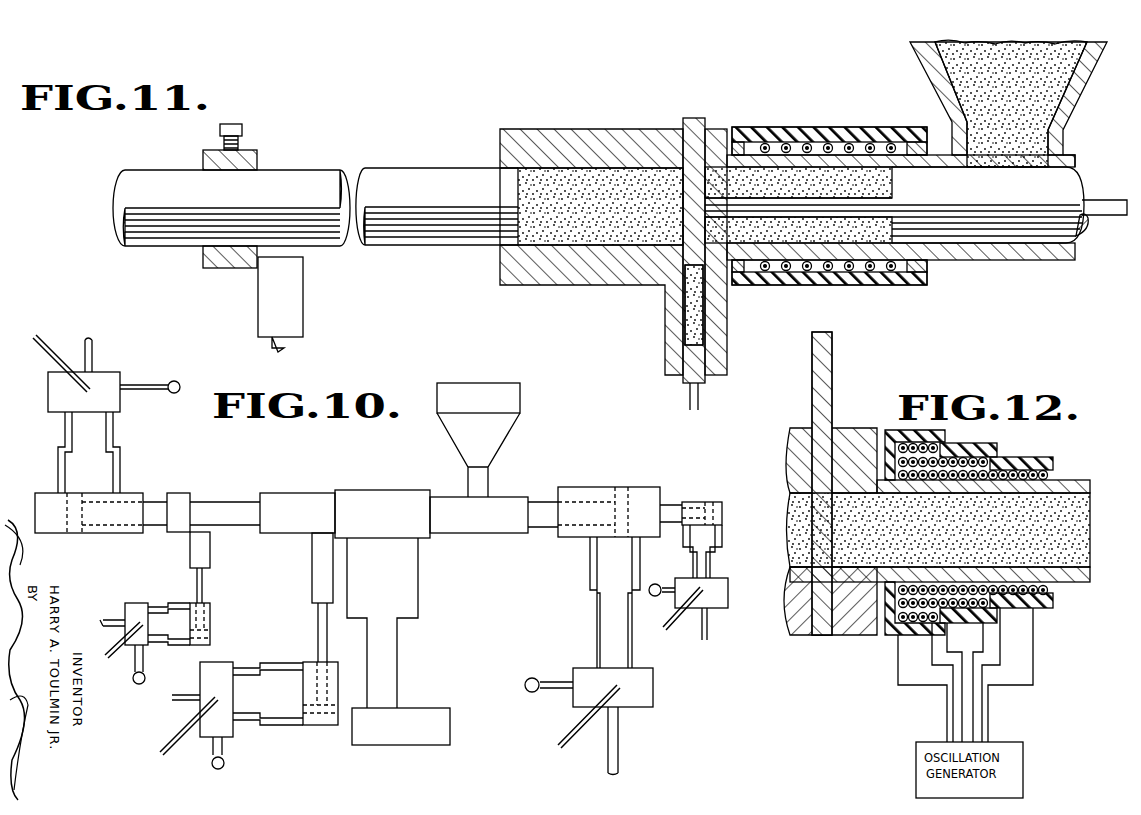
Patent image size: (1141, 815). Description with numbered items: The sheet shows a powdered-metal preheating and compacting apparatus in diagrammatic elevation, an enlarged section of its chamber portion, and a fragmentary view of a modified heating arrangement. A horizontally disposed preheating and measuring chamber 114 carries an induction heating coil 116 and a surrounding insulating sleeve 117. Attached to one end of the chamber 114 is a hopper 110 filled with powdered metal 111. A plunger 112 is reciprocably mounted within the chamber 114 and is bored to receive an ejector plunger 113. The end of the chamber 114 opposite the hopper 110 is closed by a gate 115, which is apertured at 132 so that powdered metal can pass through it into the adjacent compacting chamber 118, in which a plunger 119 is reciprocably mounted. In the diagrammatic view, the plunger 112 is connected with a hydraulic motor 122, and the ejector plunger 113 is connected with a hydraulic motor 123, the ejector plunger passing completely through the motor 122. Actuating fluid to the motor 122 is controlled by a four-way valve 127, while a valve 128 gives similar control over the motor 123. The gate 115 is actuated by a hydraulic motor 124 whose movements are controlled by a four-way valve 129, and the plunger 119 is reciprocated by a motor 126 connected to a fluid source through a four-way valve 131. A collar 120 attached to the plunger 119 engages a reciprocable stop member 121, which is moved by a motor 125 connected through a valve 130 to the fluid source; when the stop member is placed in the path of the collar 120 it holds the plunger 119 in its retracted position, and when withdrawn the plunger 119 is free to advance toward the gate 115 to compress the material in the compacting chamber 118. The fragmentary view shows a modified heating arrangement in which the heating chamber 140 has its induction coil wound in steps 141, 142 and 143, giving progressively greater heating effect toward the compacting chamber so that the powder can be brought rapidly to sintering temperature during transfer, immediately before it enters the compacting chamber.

In FIG. 11, the hopper 110 is at (1063, 118).
In FIG. 10, the hopper 110 is at (495, 438).
In FIG. 11, the powdered metal 111 is at (1023, 32).
In FIG. 11, the plunger 112 is at (1060, 190).
In FIG. 10, the plunger 112 is at (538, 510).
In FIG. 11, the ejector plunger 113 is at (760, 205).
In FIG. 10, the ejector plunger 113 is at (672, 510).
In FIG. 11, the preheating and measuring chamber 114 is at (842, 256).
In FIG. 10, the preheating and measuring chamber 114 is at (372, 507).
In FIG. 11, the gate 115 is at (712, 106).
In FIG. 10, the gate 115 is at (312, 562).
In FIG. 11, the induction heating coil 116 is at (885, 128).
In FIG. 11, the insulating sleeve 117 is at (930, 112).
In FIG. 11, the compacting chamber 118 is at (563, 178).
In FIG. 10, the compacting chamber 118 is at (310, 478).
In FIG. 11, the plunger 119 is at (372, 170).
In FIG. 10, the plunger 119 is at (248, 486).
In FIG. 11, the collar 120 is at (257, 160).
In FIG. 10, the collar 120 is at (180, 497).
In FIG. 11, the stop member 121 is at (293, 293).
In FIG. 10, the stop member 121 is at (192, 555).
In FIG. 10, the hydraulic motor 122 is at (593, 492).
In FIG. 10, the hydraulic motor 123 is at (712, 504).
In FIG. 10, the hydraulic motor 124 is at (333, 670).
In FIG. 10, the motor 125 is at (210, 617).
In FIG. 10, the motor 126 is at (78, 497).
In FIG. 10, the four-way valve 127 is at (607, 675).
In FIG. 10, the valve 128 is at (718, 597).
In FIG. 10, the four-way valve 129 is at (228, 666).
In FIG. 10, the valve 130 is at (150, 645).
In FIG. 10, the four-way valve 131 is at (113, 372).
In FIG. 11, the aperture 132 is at (702, 320).
In FIG. 12, the heating chamber 140 is at (1073, 575).
In FIG. 12, the coil step 141 is at (1050, 466).
In FIG. 12, the coil step 142 is at (992, 460).
In FIG. 12, the coil step 143 is at (898, 430).